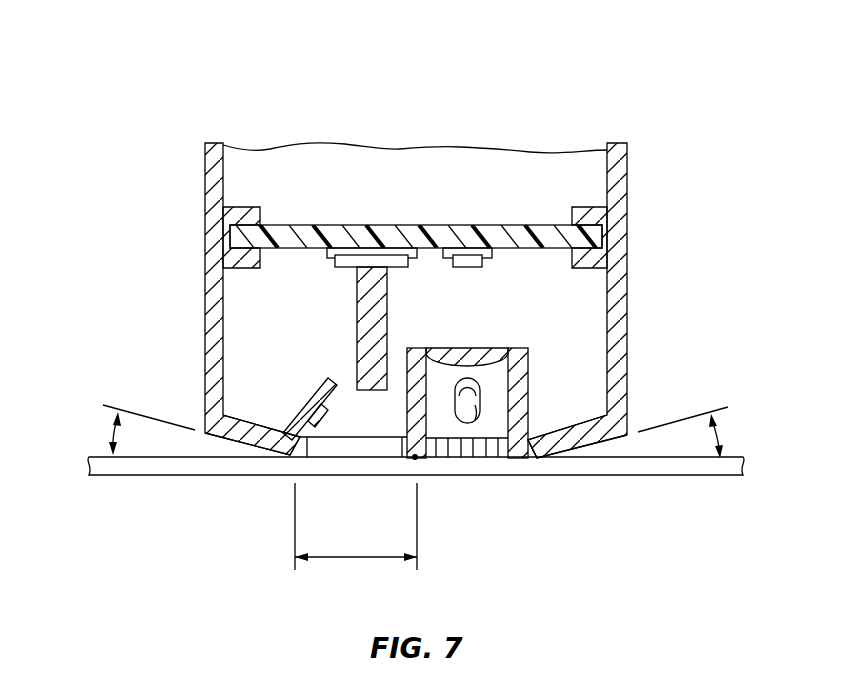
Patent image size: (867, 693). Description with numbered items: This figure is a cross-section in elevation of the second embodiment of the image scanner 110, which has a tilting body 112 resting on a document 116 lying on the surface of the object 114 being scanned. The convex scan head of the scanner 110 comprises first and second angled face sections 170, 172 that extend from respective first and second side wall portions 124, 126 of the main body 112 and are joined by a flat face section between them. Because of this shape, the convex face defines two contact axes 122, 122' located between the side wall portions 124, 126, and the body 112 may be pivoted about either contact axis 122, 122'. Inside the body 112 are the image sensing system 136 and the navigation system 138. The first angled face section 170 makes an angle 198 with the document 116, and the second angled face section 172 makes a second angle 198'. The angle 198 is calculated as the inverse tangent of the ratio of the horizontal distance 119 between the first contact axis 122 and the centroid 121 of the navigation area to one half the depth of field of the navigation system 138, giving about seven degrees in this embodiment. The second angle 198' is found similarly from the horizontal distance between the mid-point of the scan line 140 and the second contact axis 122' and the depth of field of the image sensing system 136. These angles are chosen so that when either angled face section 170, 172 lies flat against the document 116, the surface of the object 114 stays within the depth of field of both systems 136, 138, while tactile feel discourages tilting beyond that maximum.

The image scanner 110 is at (150, 105).
The body 112 is at (493, 138).
The object 114 is at (110, 484).
The document 116 is at (694, 478).
The horizontal distance 119 is at (352, 560).
The centroid of the navigation area 121 is at (415, 457).
The first contact axis 122 is at (325, 488).
The second contact axis 122' is at (547, 491).
The first side wall portion 124 is at (205, 213).
The second side wall portion 126 is at (627, 208).
The image sensing system 136 is at (255, 322).
The navigation system 138 is at (578, 349).
The scan line 140 is at (389, 483).
The first angled face section 170 is at (213, 434).
The second angled face section 172 is at (620, 437).
The angle 198 is at (120, 430).
The second angle 198' is at (716, 432).